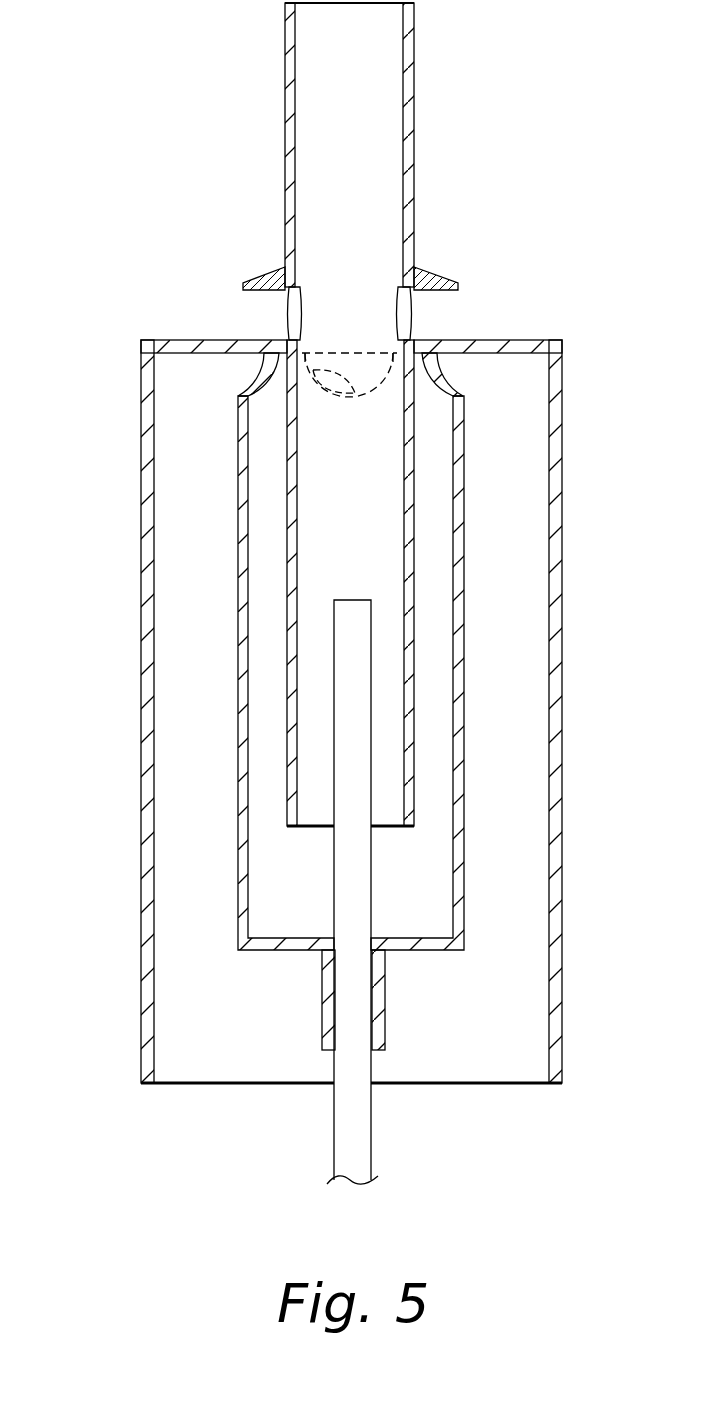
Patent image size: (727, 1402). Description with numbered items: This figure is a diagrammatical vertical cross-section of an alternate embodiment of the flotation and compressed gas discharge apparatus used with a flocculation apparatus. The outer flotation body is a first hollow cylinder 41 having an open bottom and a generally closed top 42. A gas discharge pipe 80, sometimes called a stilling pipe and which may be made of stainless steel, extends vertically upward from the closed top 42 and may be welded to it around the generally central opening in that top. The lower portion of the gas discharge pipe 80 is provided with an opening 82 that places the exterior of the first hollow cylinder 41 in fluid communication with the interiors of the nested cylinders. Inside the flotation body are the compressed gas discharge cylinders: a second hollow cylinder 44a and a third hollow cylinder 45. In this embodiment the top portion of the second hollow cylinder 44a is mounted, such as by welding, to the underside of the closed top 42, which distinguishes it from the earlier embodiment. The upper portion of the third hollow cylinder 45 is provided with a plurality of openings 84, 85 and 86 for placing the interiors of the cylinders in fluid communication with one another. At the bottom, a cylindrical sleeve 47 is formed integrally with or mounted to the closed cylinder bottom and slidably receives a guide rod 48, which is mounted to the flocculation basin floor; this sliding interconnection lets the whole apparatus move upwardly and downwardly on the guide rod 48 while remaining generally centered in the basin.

The first hollow cylinder 41 is at (141, 627).
The closed top 42 is at (190, 340).
The second hollow cylinder 44a is at (465, 653).
The third hollow cylinder 45 is at (464, 462).
The cylindrical sleeve 47 is at (386, 1015).
The guide rod 48 is at (372, 1148).
The gas discharge pipe 80 is at (414, 63).
The opening 82 is at (410, 320).
The opening 84 is at (440, 380).
The opening 85 is at (352, 388).
The opening 86 is at (262, 381).